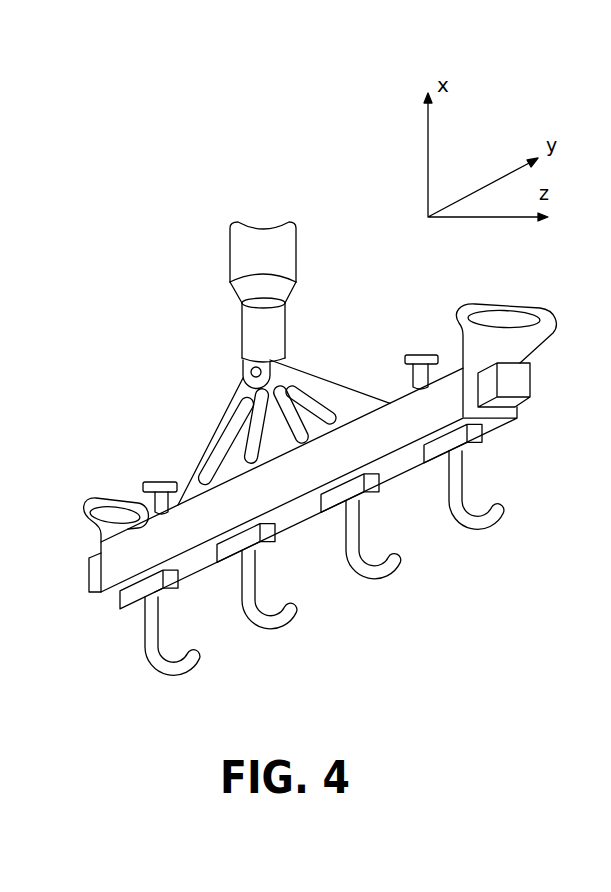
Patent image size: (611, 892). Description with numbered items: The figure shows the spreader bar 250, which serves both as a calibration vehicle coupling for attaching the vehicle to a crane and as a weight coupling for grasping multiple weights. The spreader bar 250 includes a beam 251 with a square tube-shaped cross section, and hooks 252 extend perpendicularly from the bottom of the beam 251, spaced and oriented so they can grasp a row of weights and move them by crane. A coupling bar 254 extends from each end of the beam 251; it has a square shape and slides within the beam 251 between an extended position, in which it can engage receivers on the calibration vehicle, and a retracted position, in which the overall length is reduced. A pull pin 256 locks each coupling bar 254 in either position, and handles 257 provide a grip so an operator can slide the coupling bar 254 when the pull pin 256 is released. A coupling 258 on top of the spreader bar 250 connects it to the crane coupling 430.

The crane coupling 430 is at (242, 257).
The spreader bar 250 is at (307, 363).
The beam 251 is at (295, 496).
The hooks 252 is at (482, 533).
The coupling bar 254 is at (86, 586).
The pull pin 256 is at (158, 482).
The handles 257 is at (102, 500).
The coupling 258 is at (235, 394).